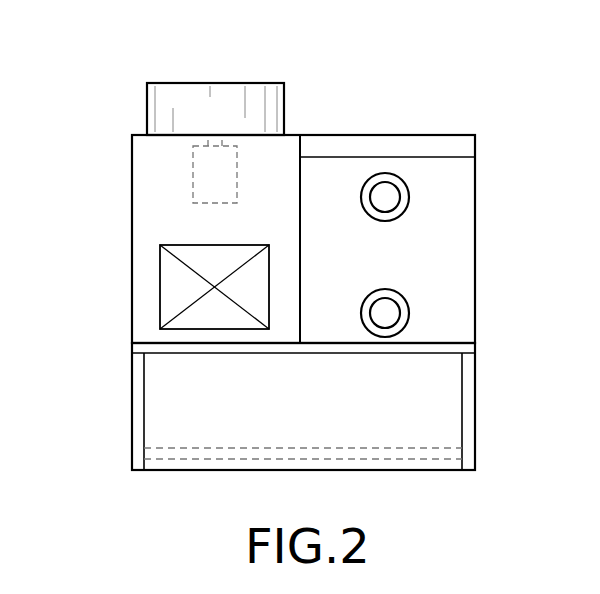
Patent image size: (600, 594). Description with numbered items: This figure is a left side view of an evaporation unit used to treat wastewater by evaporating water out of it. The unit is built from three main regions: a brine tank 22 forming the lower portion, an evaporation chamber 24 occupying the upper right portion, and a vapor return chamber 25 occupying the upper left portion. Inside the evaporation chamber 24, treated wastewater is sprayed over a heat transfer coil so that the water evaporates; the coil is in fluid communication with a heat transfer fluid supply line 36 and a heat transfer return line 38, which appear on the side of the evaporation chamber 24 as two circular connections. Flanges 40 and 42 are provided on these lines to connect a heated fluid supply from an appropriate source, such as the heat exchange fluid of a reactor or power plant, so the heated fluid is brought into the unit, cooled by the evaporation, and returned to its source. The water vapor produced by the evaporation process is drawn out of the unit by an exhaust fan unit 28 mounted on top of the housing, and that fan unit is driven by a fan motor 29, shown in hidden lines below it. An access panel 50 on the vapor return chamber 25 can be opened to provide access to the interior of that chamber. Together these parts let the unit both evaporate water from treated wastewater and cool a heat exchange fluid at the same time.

The brine tank 22 is at (462, 392).
The evaporation chamber 24 is at (475, 178).
The vapor return chamber 25 is at (132, 215).
The exhaust fan unit 28 is at (284, 107).
The fan motor 29 is at (195, 172).
The heat transfer fluid supply line 36 is at (378, 208).
The heat transfer return line 38 is at (378, 323).
The flange 40 is at (372, 217).
The flange 42 is at (402, 301).
The access panel 50 is at (160, 282).